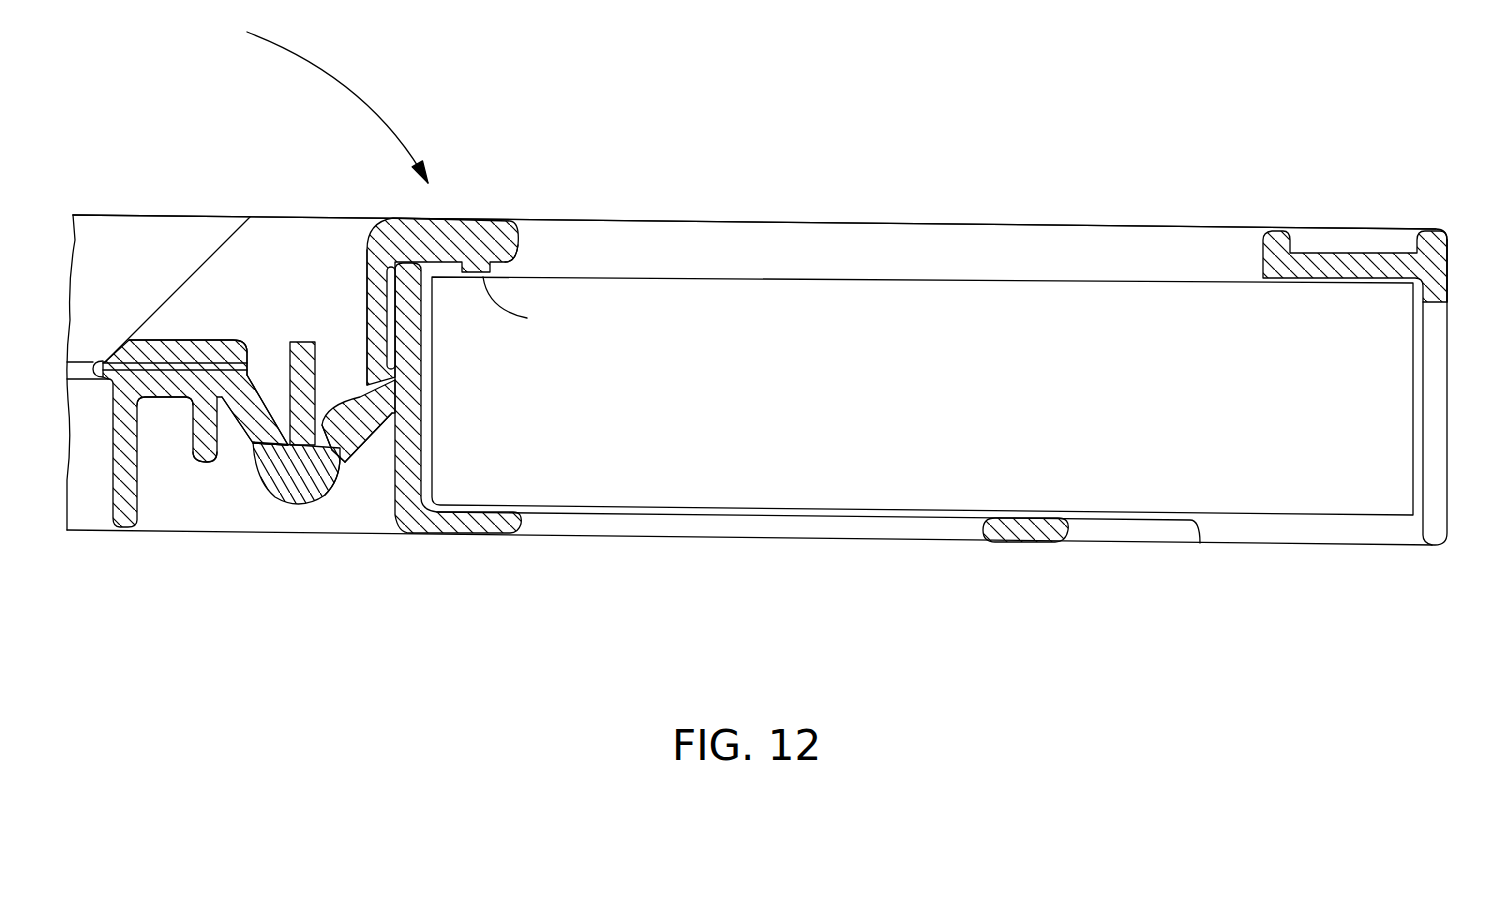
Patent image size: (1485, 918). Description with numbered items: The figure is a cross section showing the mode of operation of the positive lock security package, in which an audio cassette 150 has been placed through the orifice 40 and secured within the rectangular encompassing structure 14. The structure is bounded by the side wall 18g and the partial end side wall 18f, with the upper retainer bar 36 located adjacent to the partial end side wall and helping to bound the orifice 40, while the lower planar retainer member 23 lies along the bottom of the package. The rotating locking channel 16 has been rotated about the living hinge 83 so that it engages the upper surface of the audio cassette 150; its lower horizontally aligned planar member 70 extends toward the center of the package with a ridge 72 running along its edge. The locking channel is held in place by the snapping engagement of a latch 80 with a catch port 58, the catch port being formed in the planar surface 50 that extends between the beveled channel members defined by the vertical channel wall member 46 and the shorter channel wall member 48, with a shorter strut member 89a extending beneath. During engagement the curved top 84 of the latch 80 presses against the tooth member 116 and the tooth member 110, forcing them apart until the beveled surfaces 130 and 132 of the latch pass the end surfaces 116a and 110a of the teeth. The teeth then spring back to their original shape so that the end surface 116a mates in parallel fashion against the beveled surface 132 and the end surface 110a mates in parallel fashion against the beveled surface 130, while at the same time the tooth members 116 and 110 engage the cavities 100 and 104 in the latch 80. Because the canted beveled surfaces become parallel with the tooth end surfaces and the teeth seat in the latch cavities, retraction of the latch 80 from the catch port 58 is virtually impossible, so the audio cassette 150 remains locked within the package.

The rectangular encompassing structure 14 is at (797, 211).
The rotating locking channel 16 is at (452, 218).
The partial end side wall 18f is at (1445, 495).
The side wall 18g is at (973, 240).
The planar retainer member 23 is at (1035, 541).
The upper retainer bar 36 is at (1450, 250).
The orifice 40 is at (1185, 242).
The vertical channel wall member 46 is at (422, 430).
The shorter channel wall member 48 is at (105, 500).
The planar surface 50 is at (170, 400).
The catch port 58 is at (284, 336).
The lower horizontally aligned planar member 70 is at (543, 219).
The ridge 72 is at (524, 304).
The latch 80 is at (300, 508).
The living hinge 83 is at (97, 360).
The curved top 84 is at (336, 500).
The shorter strut member 89a is at (186, 460).
The cavity 100 is at (275, 378).
The cavity 104 is at (333, 374).
The tooth member 110 is at (345, 458).
The end surface 110a is at (352, 462).
The tooth member 116 is at (236, 449).
The end surface 116a is at (244, 467).
The beveled surface 130 is at (360, 410).
The beveled surface 132 is at (267, 398).
The audio cassette 150 is at (940, 403).